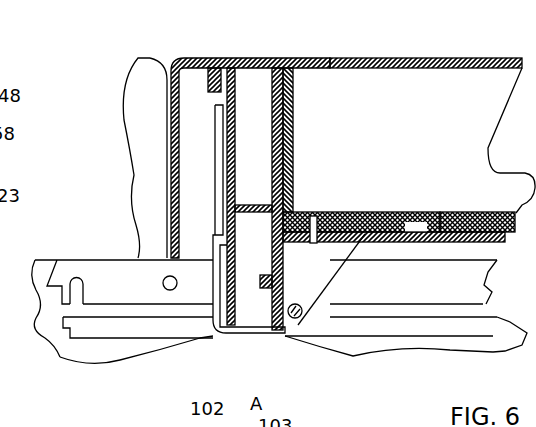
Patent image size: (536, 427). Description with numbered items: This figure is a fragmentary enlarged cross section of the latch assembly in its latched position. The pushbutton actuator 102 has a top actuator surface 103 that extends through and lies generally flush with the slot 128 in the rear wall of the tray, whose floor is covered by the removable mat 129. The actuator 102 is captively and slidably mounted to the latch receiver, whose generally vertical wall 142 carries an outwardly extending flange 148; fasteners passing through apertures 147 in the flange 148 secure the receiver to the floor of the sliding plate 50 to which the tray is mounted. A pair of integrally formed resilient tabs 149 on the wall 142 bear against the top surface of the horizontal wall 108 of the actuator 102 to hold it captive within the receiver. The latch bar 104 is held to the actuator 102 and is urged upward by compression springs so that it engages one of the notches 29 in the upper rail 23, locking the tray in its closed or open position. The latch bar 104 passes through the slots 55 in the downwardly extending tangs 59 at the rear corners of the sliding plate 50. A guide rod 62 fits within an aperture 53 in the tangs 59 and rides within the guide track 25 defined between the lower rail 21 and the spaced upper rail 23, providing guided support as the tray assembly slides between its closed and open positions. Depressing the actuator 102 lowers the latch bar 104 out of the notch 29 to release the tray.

The pushbutton actuator 102 is at (264, 56).
The top actuator surface 103 is at (260, 58).
The latch bar 104 is at (284, 268).
The horizontal wall 108 is at (253, 204).
The slot 128 is at (213, 57).
The mat 129 is at (360, 58).
The vertical wall 142 is at (293, 95).
The apertures 147 is at (318, 214).
The flange 148 is at (368, 212).
The resilient tabs 149 is at (268, 190).
The sliding plate 50 is at (453, 217).
The lower rail 21 is at (431, 325).
The upper rail 23 is at (107, 268).
The guide track 25 is at (137, 310).
The notches 29 is at (75, 292).
The aperture 53 is at (300, 312).
The slots 55 is at (264, 290).
The tangs 59 is at (330, 242).
The guide rod 62 is at (294, 318).